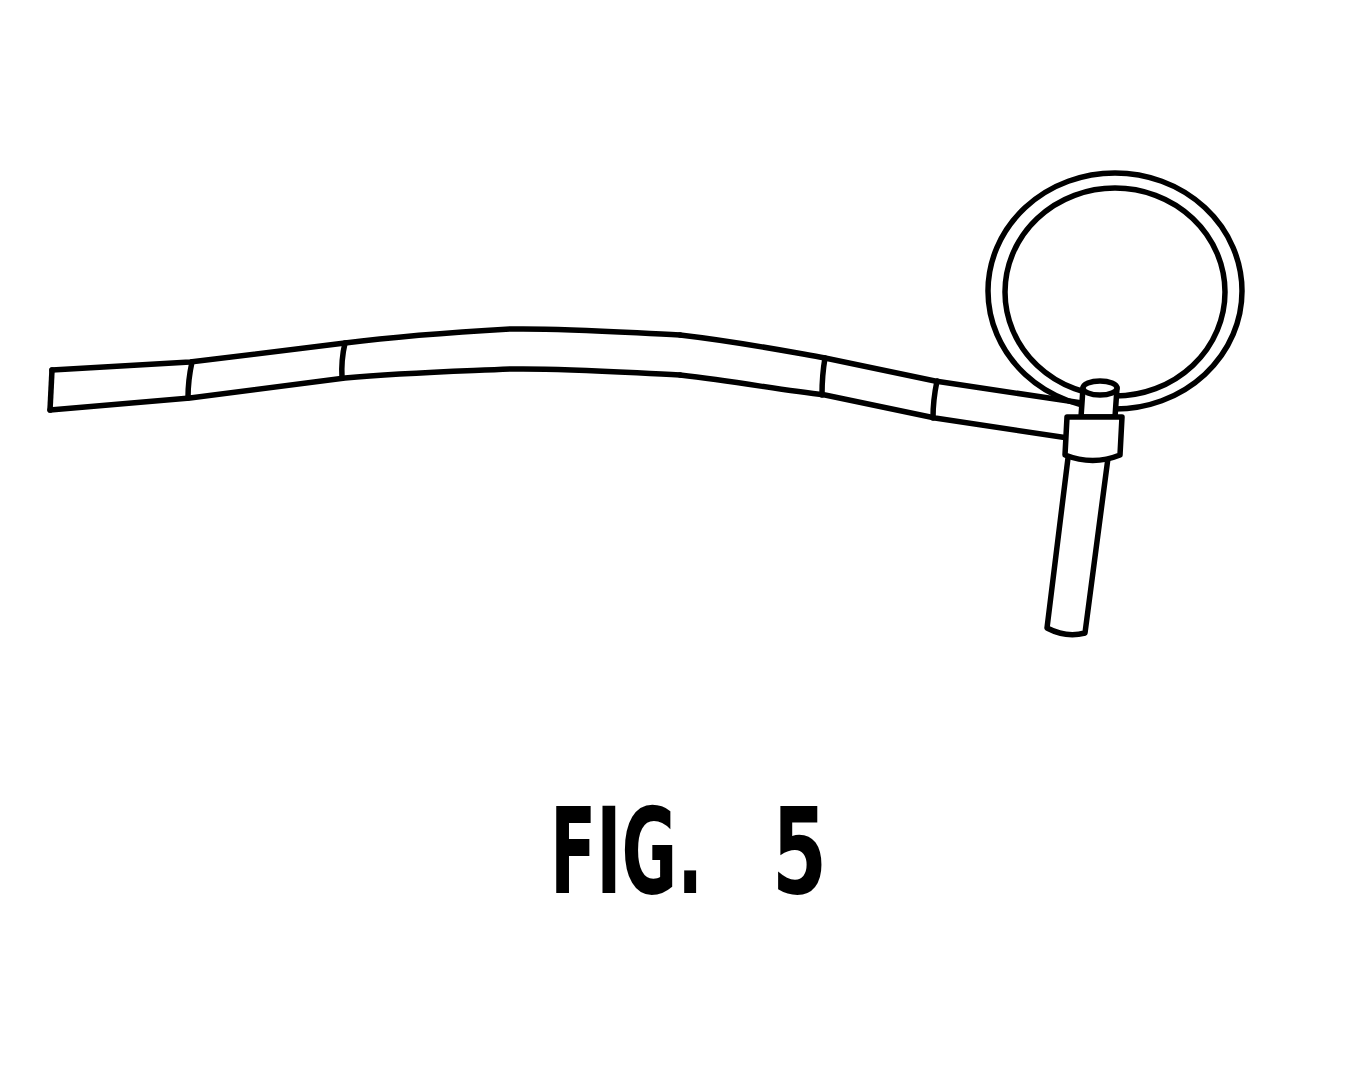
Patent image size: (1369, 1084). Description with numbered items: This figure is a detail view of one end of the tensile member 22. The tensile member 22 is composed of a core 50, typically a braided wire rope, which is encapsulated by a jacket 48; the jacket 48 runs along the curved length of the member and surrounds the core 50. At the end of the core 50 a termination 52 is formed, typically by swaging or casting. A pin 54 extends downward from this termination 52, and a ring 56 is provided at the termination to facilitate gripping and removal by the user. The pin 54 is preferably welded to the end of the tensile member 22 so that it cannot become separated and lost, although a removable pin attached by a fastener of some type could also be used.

The tensile member 22 is at (240, 269).
The jacket 48 is at (400, 370).
The core 50 is at (972, 415).
The termination 52 is at (1102, 438).
The pin 54 is at (1077, 595).
The ring 56 is at (1010, 230).